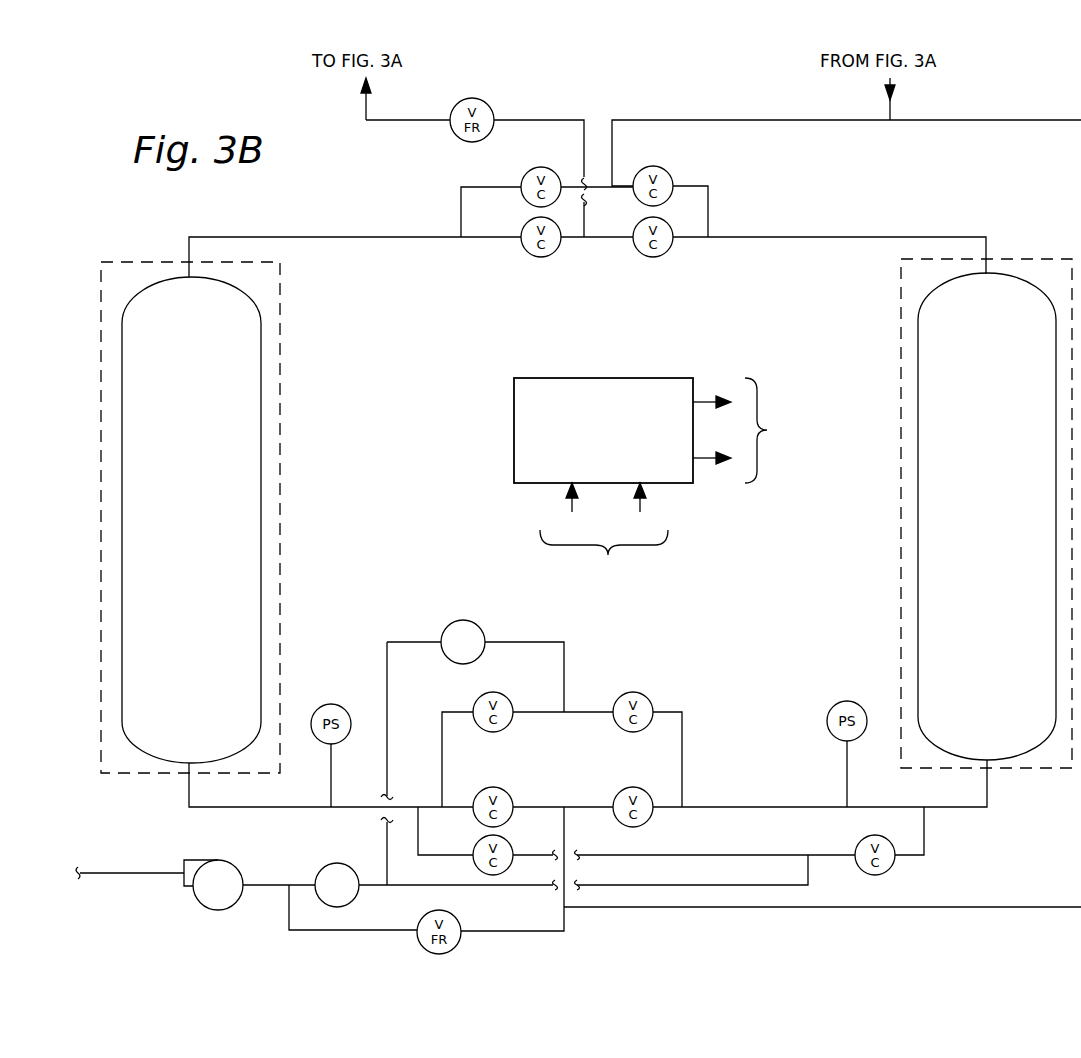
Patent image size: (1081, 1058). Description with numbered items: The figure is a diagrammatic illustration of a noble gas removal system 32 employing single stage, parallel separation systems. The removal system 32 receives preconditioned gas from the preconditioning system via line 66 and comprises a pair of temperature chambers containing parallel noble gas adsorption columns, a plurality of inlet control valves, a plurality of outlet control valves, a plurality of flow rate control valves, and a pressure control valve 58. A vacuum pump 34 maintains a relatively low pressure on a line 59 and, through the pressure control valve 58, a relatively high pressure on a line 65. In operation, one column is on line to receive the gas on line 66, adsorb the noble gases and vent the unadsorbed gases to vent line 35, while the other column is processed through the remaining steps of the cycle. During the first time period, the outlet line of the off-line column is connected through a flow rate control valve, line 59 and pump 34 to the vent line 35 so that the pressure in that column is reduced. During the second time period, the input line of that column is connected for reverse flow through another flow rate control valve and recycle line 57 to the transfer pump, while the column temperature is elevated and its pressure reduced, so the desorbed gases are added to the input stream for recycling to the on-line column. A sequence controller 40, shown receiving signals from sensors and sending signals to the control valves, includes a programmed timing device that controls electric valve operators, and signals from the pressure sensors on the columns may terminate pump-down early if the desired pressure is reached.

The removal system 32 is at (924, 210).
The vacuum pump 34 is at (232, 861).
The vent line 35 is at (122, 876).
The sequence controller 40 is at (610, 378).
The recycle line 57 is at (387, 121).
The pressure control valve 58 is at (340, 863).
The line 59 is at (341, 931).
The line 65 is at (660, 886).
The line 66 is at (888, 108).